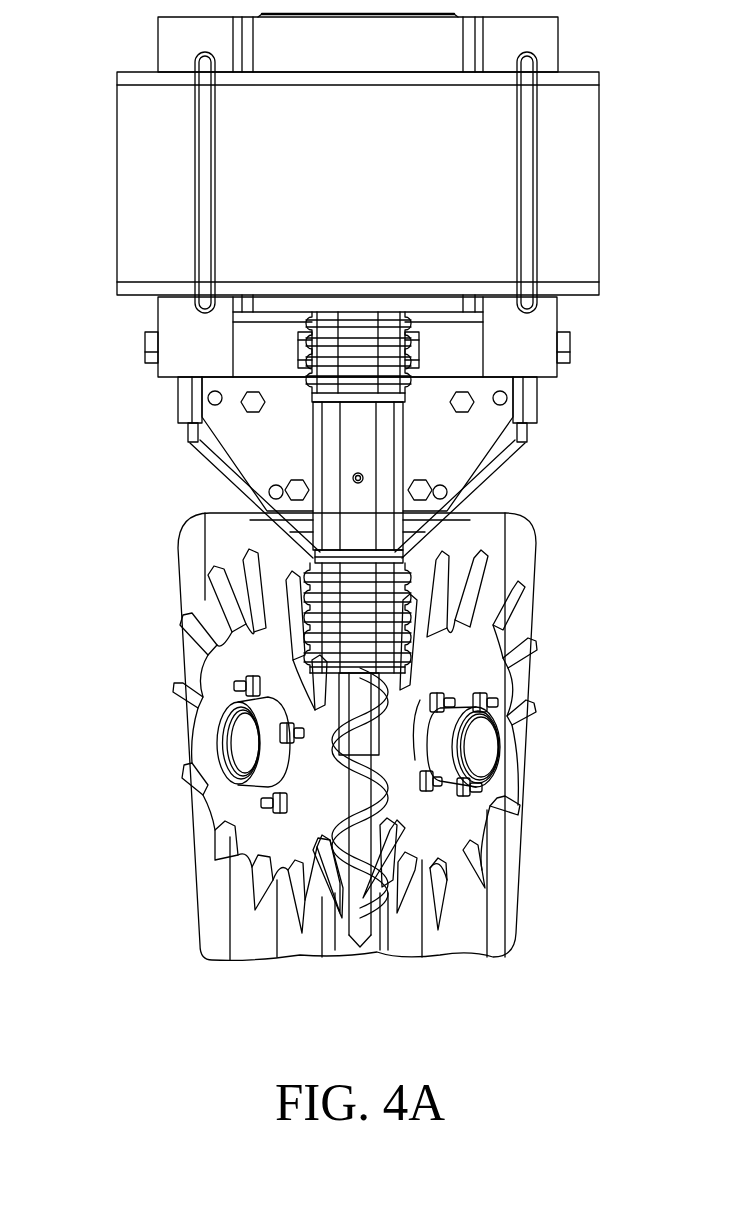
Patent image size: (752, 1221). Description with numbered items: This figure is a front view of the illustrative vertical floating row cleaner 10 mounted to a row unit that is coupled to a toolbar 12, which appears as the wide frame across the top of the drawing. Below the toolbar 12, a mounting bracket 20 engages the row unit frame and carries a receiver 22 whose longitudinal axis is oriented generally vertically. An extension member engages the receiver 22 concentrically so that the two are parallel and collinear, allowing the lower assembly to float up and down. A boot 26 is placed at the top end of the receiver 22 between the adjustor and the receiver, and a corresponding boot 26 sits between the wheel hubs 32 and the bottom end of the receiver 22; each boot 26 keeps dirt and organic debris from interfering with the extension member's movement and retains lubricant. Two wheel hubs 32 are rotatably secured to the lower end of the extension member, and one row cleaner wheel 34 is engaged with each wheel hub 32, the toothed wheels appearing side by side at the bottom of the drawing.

The vertical floating row cleaner 10 is at (318, 736).
The toolbar 12 is at (376, 184).
The mounting bracket 20 is at (262, 440).
The receiver 22 is at (382, 433).
The boot 26 is at (318, 343).
The wheel hub 32 is at (230, 742).
The row cleaner wheel 34 is at (452, 812).